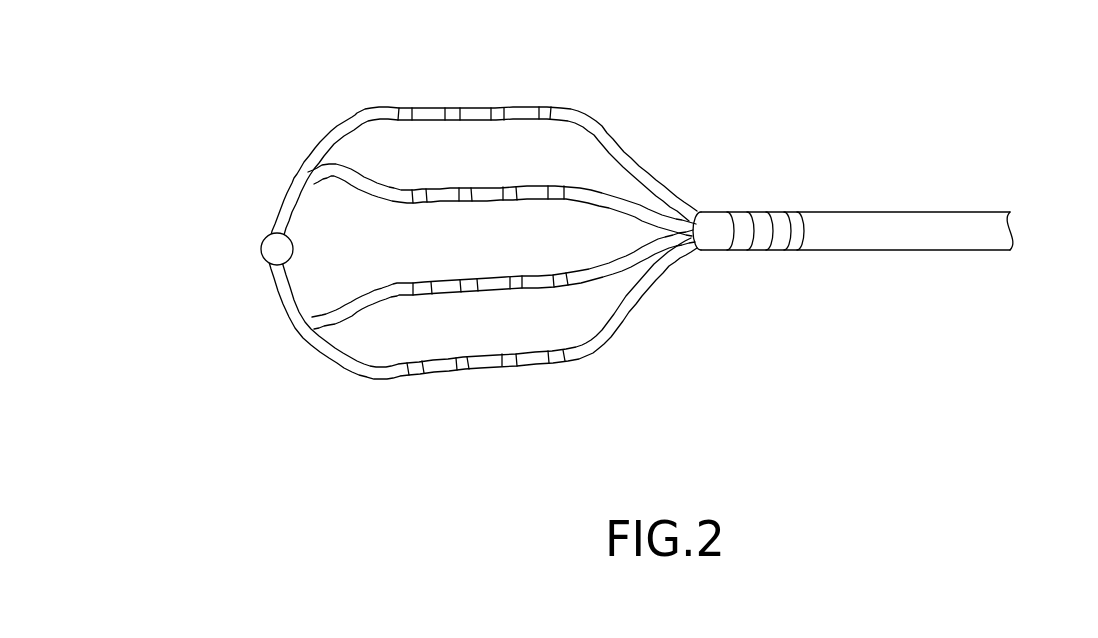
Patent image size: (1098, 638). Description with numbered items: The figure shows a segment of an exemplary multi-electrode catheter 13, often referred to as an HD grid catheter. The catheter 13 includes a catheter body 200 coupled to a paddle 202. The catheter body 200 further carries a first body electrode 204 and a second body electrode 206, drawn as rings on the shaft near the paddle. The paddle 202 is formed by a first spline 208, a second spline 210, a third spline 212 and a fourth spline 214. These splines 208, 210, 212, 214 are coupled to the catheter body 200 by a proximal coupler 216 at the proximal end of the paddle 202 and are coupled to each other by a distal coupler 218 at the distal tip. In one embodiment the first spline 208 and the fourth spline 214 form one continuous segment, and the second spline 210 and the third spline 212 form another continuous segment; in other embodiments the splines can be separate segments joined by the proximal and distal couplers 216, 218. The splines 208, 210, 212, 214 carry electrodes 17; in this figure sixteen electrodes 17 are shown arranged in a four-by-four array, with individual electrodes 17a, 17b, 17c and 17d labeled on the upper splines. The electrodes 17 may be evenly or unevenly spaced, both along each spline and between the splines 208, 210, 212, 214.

The multi-electrode catheter 13 is at (619, 234).
The electrodes 17 is at (463, 376).
The electrode 17a is at (405, 106).
The electrode 17b is at (447, 123).
The electrode 17c is at (417, 205).
The electrode 17d is at (463, 205).
The catheter body 200 is at (984, 244).
The paddle 202 is at (433, 234).
The first body electrode 204 is at (790, 216).
The second body electrode 206 is at (755, 215).
The first spline 208 is at (482, 150).
The second spline 210 is at (461, 212).
The third spline 212 is at (313, 324).
The fourth spline 214 is at (482, 337).
The proximal coupler 216 is at (712, 222).
The distal coupler 218 is at (274, 251).